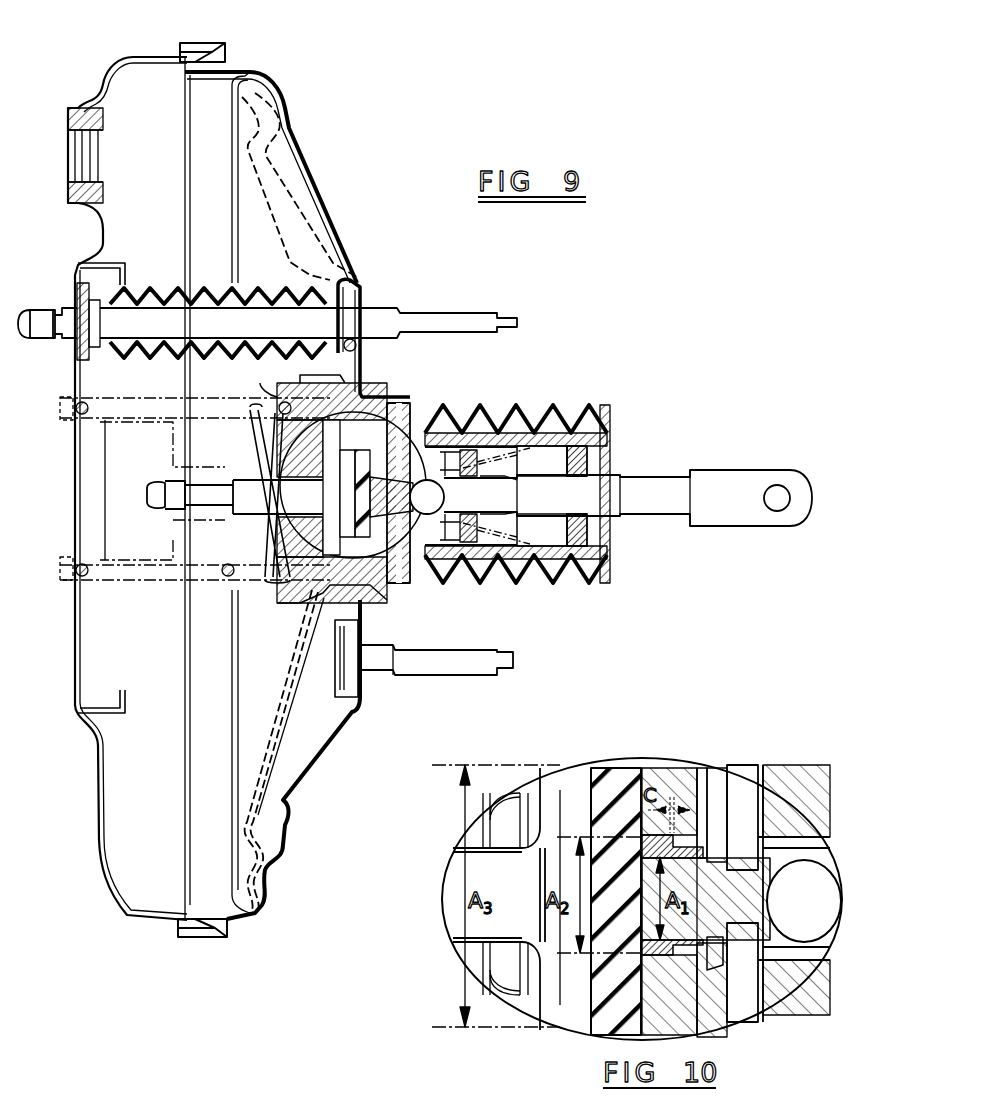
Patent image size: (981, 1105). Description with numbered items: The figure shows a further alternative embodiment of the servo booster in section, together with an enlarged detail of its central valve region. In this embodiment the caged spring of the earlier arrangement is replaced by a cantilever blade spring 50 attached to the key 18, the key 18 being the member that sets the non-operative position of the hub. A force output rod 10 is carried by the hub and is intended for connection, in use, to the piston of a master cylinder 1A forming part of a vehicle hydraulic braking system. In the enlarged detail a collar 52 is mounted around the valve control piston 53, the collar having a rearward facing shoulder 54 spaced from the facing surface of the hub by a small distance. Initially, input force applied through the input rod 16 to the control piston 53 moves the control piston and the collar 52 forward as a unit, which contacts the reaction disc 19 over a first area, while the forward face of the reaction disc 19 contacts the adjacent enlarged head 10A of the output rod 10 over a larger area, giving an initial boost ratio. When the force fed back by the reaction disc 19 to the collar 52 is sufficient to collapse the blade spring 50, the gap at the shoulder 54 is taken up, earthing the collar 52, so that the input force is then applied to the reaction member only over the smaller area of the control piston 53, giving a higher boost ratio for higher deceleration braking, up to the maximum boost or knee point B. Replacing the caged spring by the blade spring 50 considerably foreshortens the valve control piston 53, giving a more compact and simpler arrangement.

In FIG. 9, the master cylinder 1A is at (3, 395).
In FIG. 9, the force output rod 10 is at (203, 497).
In FIG. 10, the force output rod 10 is at (485, 865).
In FIG. 10, the enlarged head of the output rod 10A is at (560, 990).
In FIG. 9, the input rod 16 is at (666, 488).
In FIG. 10, the input rod 16 is at (808, 915).
In FIG. 9, the key 18 is at (418, 418).
In FIG. 10, the key 18 is at (720, 810).
In FIG. 10, the reaction disc 19 is at (617, 770).
In FIG. 9, the cantilever blade spring 50 is at (380, 420).
In FIG. 10, the cantilever blade spring 50 is at (732, 845).
In FIG. 10, the collar 52 is at (727, 1015).
In FIG. 10, the valve control piston 53 is at (780, 840).
In FIG. 10, the rearward facing shoulder 54 is at (712, 825).
In FIG. 10, the maximum boost point B is at (680, 955).